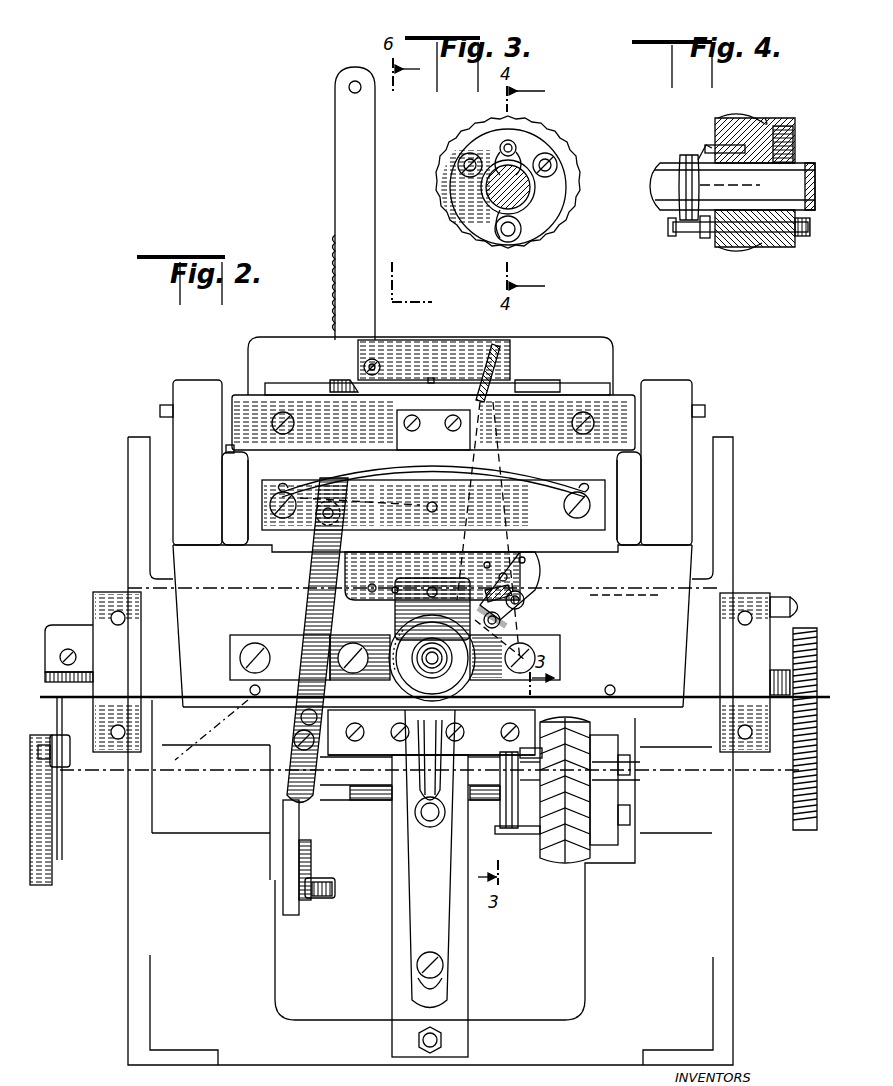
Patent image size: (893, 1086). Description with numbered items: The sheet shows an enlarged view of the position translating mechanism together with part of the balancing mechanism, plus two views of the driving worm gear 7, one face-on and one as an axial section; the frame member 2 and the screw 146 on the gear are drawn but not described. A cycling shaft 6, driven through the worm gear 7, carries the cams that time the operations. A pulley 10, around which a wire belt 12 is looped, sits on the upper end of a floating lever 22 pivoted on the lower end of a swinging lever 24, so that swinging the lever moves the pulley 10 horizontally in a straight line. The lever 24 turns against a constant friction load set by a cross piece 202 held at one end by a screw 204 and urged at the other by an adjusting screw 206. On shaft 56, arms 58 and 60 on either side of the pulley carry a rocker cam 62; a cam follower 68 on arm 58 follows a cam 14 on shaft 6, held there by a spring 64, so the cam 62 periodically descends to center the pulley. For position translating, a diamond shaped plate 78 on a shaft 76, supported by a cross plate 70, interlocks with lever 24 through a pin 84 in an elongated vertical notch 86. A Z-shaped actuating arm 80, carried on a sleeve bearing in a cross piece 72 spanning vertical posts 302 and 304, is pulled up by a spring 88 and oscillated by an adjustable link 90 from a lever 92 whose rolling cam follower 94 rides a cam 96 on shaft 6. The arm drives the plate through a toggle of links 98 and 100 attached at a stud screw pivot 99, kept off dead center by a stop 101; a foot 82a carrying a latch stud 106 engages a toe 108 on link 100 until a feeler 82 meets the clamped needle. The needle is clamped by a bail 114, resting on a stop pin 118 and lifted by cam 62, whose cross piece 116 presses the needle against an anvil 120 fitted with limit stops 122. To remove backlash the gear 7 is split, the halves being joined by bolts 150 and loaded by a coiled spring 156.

In FIG. 2, the base plate 2 is at (431, 378).
In FIG. 2, the cycling shaft 6 is at (370, 788).
In FIG. 3, the cycling shaft 6 is at (530, 195).
In FIG. 4, the cycling shaft 6 is at (668, 185).
In FIG. 2, the worm gear 7 is at (560, 868).
In FIG. 3, the worm gear 7 is at (448, 136).
In FIG. 4, the worm gear 7 is at (727, 115).
In FIG. 2, the pulley 10 is at (462, 656).
In FIG. 2, the wire belt 12 is at (160, 680).
In FIG. 2, the cam 14 is at (52, 875).
In FIG. 2, the floating lever 22 is at (420, 862).
In FIG. 2, the swinging lever 24 is at (450, 718).
In FIG. 2, the shaft 56 is at (40, 636).
In FIG. 2, the rocker arm 58 is at (108, 632).
In FIG. 2, the arm 60 is at (760, 620).
In FIG. 2, the rocker cam 62 is at (605, 590).
In FIG. 2, the spring 64 is at (800, 820).
In FIG. 2, the cam follower 68 is at (58, 740).
In FIG. 2, the cross plate 70 is at (305, 513).
In FIG. 2, the cross piece 72 is at (412, 495).
In FIG. 2, the shaft 76 is at (427, 518).
In FIG. 2, the diamond shaped plate 78 is at (338, 520).
In FIG. 2, the actuating arm 80 is at (352, 472).
In FIG. 2, the feeler 82 is at (495, 344).
In FIG. 2, the foot 82a is at (478, 648).
In FIG. 2, the pin 84 is at (420, 590).
In FIG. 2, the elongated vertical notch 86 is at (438, 588).
In FIG. 2, the spring 88 is at (334, 305).
In FIG. 2, the adjustable link 90 is at (318, 603).
In FIG. 2, the lever 92 is at (282, 858).
In FIG. 2, the rolling cam follower 94 is at (315, 898).
In FIG. 2, the cam 96 is at (312, 855).
In FIG. 2, the link 98 is at (488, 584).
In FIG. 2, the stud screw pivot 99 is at (522, 556).
In FIG. 2, the link 100 is at (506, 573).
In FIG. 2, the stop 101 is at (486, 562).
In FIG. 2, the latch stud 106 is at (500, 622).
In FIG. 2, the toe 108 is at (525, 602).
In FIG. 2, the bail 114 is at (258, 415).
In FIG. 2, the cross piece 116 is at (378, 425).
In FIG. 2, the stop pin 118 is at (228, 455).
In FIG. 2, the anvil 120 is at (370, 352).
In FIG. 2, the limit stops 122 is at (390, 377).
In FIG. 4, the set screw 146 is at (785, 130).
In FIG. 2, the bolts 150 is at (515, 838).
In FIG. 3, the bolts 150 is at (556, 162).
In FIG. 4, the bolts 150 is at (695, 232).
In FIG. 2, the coiled spring 156 is at (500, 770).
In FIG. 3, the coiled spring 156 is at (495, 190).
In FIG. 4, the coiled spring 156 is at (683, 158).
In FIG. 2, the cross piece 202 is at (383, 693).
In FIG. 2, the screw 204 is at (537, 652).
In FIG. 2, the adjusting screw 206 is at (335, 645).
In FIG. 2, the vertical post 302 is at (250, 478).
In FIG. 2, the vertical post 304 is at (610, 470).